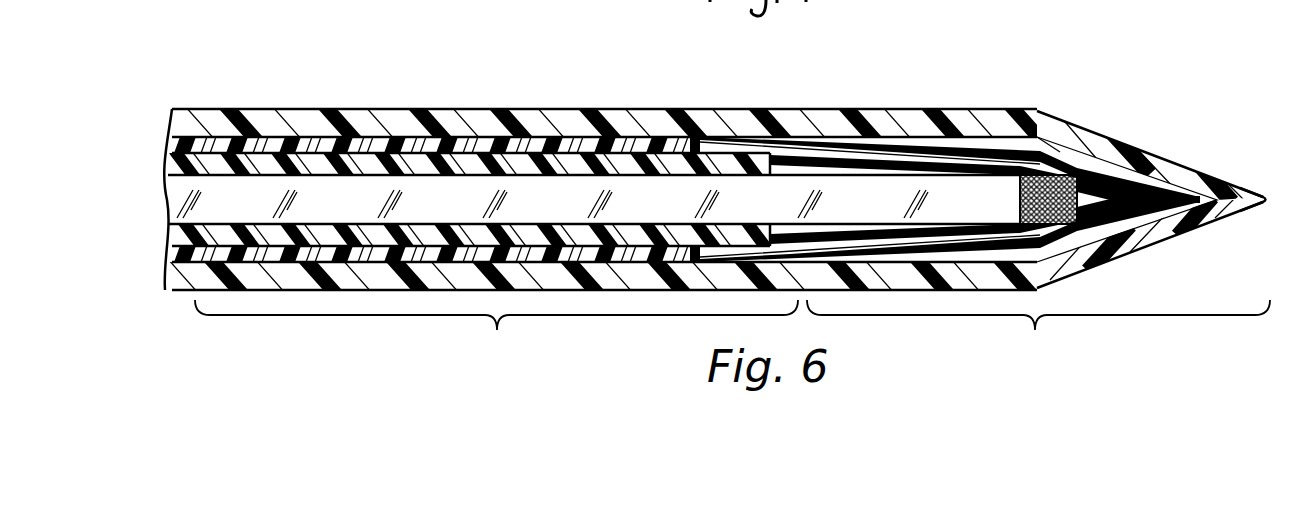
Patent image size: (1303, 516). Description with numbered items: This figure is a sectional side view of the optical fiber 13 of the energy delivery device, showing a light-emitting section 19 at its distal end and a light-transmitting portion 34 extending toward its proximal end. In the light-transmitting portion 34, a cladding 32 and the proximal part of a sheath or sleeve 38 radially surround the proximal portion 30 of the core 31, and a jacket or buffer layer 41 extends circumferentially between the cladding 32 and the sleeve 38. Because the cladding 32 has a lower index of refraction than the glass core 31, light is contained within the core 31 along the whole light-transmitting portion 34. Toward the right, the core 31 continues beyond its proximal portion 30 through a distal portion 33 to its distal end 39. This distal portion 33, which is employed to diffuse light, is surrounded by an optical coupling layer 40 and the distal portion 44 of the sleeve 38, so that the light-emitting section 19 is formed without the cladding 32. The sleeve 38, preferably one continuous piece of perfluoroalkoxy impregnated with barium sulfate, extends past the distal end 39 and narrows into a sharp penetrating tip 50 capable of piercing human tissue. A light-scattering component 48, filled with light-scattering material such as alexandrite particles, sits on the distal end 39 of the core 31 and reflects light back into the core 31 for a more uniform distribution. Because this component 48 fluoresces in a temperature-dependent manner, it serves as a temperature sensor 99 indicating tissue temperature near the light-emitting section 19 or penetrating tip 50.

The optical fiber 13 is at (530, 58).
The light-emitting section 19 is at (1038, 329).
The proximal portion of core 30 is at (200, 173).
The core 31 is at (302, 192).
The cladding 32 is at (472, 167).
The distal portion of core 33 is at (867, 197).
The light-transmitting portion 34 is at (496, 331).
The sleeve 38 is at (612, 109).
The distal end of core 39 is at (1018, 198).
The optical coupling layer 40 is at (785, 140).
The buffer layer 41 is at (352, 140).
The distal portion of sleeve 44 is at (807, 117).
The light-scattering component 48 is at (1065, 176).
The penetrating tip 50 is at (1272, 193).
The temperature sensor 99 is at (1046, 150).